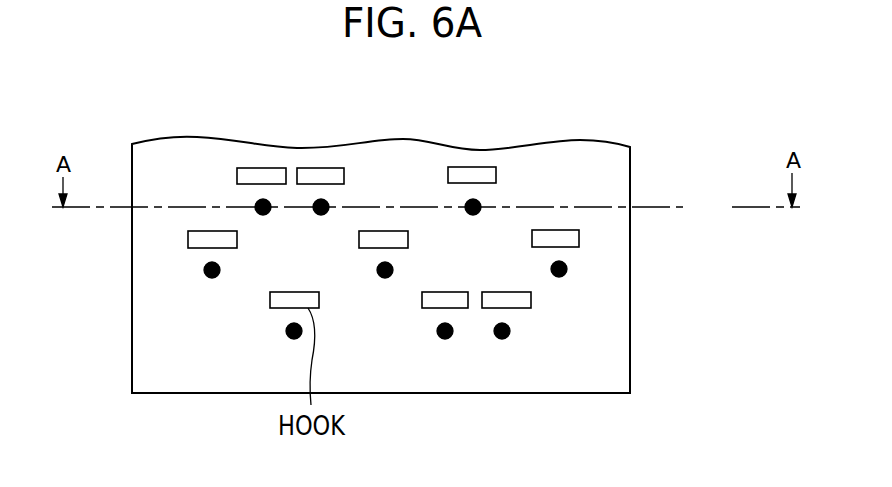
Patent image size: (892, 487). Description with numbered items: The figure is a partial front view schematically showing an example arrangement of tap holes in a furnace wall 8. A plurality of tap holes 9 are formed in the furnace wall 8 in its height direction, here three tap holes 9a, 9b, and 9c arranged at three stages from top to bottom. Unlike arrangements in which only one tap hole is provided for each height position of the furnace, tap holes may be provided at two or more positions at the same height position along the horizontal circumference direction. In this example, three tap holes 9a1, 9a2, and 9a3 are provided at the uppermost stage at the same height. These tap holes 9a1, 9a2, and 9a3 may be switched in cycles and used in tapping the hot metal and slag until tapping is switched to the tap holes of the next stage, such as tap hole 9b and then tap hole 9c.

The furnace wall 8 is at (132, 270).
The tap holes 9 is at (716, 191).
The tap hole 9a is at (476, 155).
The tap hole 9a1 is at (263, 200).
The tap hole 9a2 is at (321, 200).
The tap hole 9a3 is at (471, 151).
The tap hole 9b is at (574, 269).
The tap hole 9c is at (518, 330).